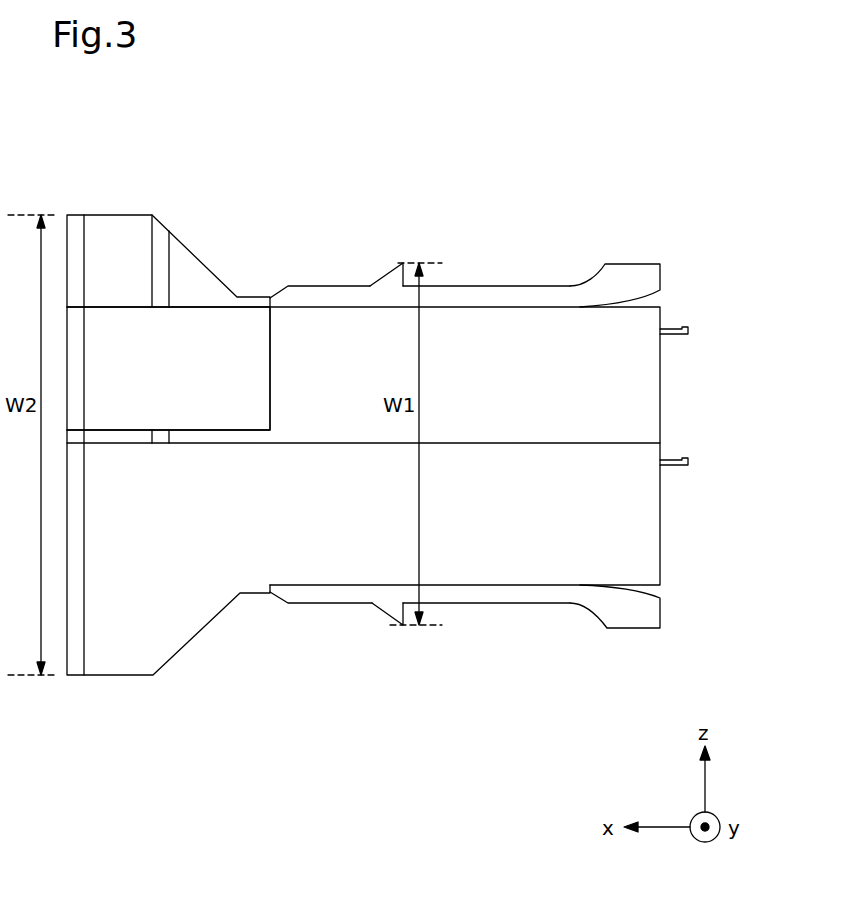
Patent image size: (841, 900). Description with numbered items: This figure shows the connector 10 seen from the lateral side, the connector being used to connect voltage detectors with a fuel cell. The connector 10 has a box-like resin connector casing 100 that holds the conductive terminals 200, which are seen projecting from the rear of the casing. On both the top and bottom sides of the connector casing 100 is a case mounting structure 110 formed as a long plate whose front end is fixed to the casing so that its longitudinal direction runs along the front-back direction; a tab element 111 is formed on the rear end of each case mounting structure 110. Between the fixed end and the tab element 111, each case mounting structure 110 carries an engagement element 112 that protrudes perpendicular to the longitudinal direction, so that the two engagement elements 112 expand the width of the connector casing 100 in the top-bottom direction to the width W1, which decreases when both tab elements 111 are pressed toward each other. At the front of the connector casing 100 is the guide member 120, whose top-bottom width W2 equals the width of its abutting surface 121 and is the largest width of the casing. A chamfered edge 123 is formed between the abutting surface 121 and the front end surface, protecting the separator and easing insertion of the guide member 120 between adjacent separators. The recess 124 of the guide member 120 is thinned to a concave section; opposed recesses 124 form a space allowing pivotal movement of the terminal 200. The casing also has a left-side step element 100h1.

The connector 10 is at (642, 160).
The connector casing 100 is at (660, 522).
The left-side step element 100h1 is at (610, 442).
The case mounting structure 110 is at (501, 286).
The tab element 111 is at (660, 272).
The engagement element 112 is at (385, 268).
The guide member 120 is at (198, 633).
The abutting surface 121 is at (117, 230).
The chamfered edge 123 is at (76, 222).
The recess 124 is at (196, 342).
The terminal 200 is at (683, 329).